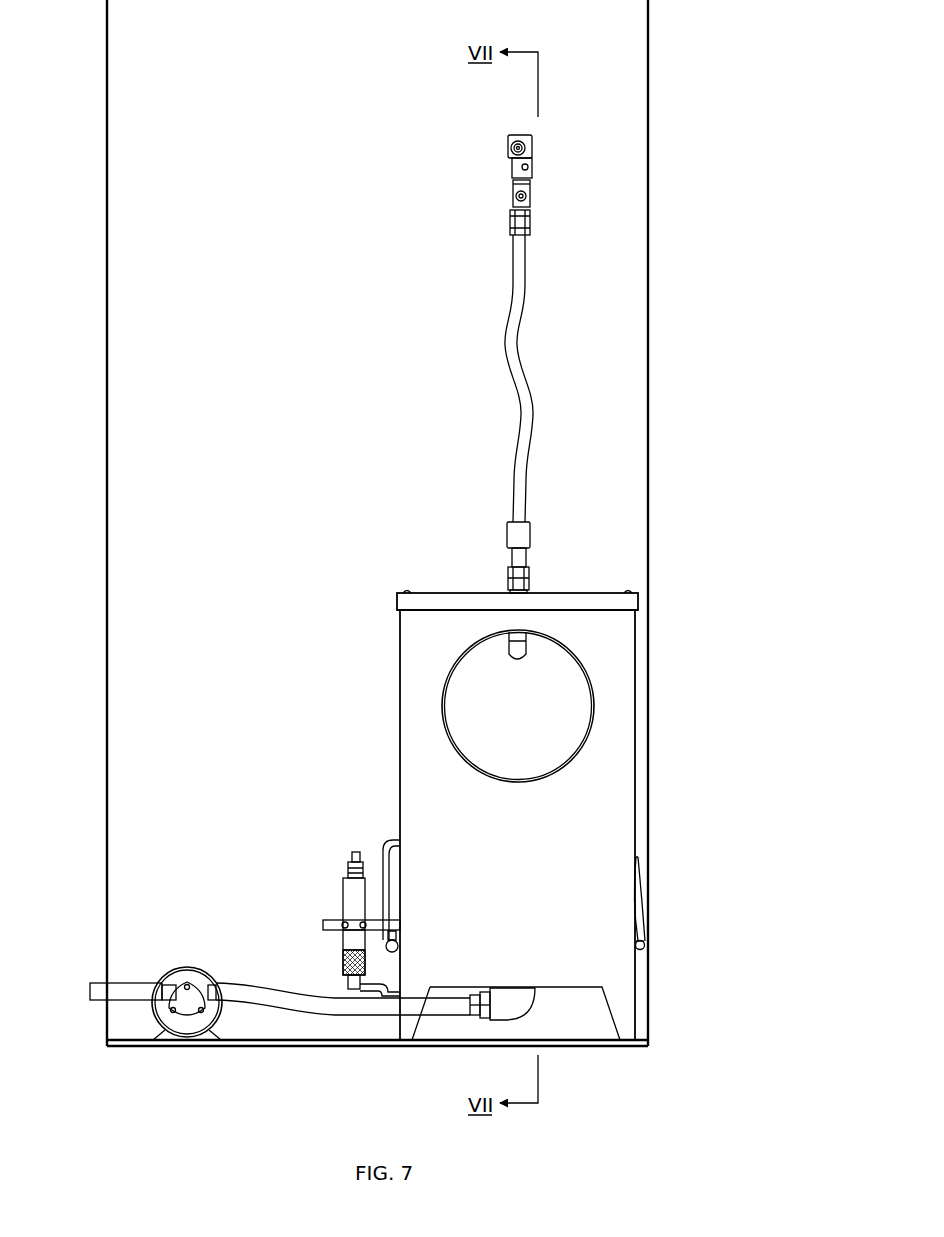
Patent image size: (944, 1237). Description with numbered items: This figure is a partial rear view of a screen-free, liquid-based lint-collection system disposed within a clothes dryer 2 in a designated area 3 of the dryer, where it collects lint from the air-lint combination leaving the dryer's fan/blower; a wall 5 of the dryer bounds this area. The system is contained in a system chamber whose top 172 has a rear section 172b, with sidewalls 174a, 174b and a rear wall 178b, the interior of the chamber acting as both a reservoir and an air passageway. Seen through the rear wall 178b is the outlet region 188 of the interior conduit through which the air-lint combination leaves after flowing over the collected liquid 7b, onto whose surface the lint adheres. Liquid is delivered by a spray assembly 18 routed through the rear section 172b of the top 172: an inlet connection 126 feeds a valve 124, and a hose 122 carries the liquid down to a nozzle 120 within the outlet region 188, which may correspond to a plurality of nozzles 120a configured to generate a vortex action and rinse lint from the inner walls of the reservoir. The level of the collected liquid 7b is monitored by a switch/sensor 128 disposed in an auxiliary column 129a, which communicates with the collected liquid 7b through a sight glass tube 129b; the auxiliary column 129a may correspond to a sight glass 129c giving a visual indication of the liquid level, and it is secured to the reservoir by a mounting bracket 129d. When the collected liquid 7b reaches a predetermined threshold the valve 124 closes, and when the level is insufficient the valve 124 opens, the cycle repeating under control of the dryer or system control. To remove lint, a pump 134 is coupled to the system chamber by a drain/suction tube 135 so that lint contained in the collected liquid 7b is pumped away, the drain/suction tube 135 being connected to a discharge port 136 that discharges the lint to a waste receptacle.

The clothes dryer 2 is at (700, 67).
The designated area 3 is at (254, 650).
The housing wall 5 is at (652, 215).
The collected liquid 7b is at (338, 950).
The spray assembly 18 is at (504, 532).
The nozzle 120 is at (510, 661).
The nozzles 120a is at (649, 948).
The hose 122 is at (512, 312).
The valve 124 is at (510, 169).
The inlet connection 126 is at (506, 143).
The switch/sensor 128 is at (347, 850).
The auxiliary column 129a is at (340, 897).
The sight glass tube 129b is at (386, 988).
The sight glass 129c is at (330, 965).
The mounting bracket 129d is at (325, 925).
The pump 134 is at (185, 968).
The drain/suction tube 135 is at (446, 1020).
The discharge port 136 is at (98, 983).
The top 172 is at (583, 592).
The rear section 172b is at (600, 604).
The sidewall 174a is at (638, 732).
The sidewall 174b is at (398, 730).
The rear wall 178b is at (583, 848).
The outlet region 188 is at (583, 663).